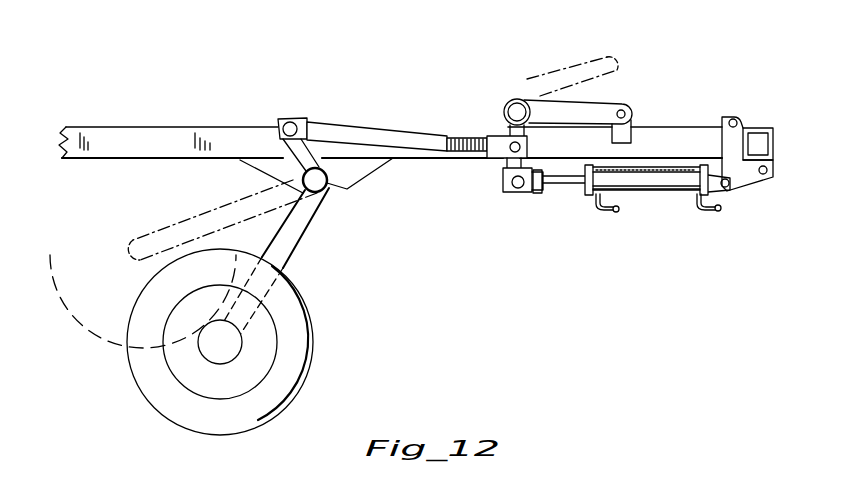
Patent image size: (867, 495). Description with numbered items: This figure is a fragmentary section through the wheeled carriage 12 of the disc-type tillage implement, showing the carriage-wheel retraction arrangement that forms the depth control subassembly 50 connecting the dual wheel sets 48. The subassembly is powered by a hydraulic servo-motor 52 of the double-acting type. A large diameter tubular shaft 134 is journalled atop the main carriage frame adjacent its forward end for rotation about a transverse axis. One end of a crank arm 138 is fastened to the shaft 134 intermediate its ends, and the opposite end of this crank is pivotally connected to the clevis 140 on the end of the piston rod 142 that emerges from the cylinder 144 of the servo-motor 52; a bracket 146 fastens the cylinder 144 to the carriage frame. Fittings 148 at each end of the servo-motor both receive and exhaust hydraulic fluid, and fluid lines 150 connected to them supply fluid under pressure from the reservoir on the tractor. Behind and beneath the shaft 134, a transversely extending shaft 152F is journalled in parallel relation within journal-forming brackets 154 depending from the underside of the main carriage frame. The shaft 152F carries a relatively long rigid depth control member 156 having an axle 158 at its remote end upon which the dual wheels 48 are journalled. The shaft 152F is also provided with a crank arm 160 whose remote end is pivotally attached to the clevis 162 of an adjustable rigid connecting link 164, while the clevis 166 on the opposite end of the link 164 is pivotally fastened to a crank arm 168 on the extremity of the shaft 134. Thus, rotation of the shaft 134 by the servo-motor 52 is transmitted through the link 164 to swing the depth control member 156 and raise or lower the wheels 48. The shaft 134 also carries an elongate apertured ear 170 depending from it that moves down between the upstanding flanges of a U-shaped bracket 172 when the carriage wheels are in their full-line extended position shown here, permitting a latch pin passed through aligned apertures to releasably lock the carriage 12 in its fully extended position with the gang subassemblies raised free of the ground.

The wheeled carriage 12 is at (210, 100).
The dual wheel sets 48 is at (300, 293).
The depth control subassembly 50 is at (513, 94).
The hydraulic servo-motor 52 is at (680, 198).
The tubular shaft 134 is at (525, 92).
The crank arm 138 is at (503, 125).
The clevis 140 is at (570, 184).
The piston rod 142 is at (595, 196).
The cylinder 144 is at (642, 178).
The bracket 146 is at (737, 80).
The fittings 148 is at (604, 188).
The fluid lines 150 is at (620, 210).
The transversely extending shaft 152F is at (321, 168).
The journal-forming brackets 154 is at (348, 190).
The depth control members 156 is at (297, 237).
The axles 158 is at (230, 345).
The crank arms 160 is at (292, 150).
The clevis 162 is at (323, 95).
The adjustable rigid connecting links 164 is at (412, 110).
The clevis 166 is at (493, 138).
The crank arms 168 is at (502, 172).
The apertured ear 170 is at (583, 112).
The U-shaped bracket 172 is at (612, 131).